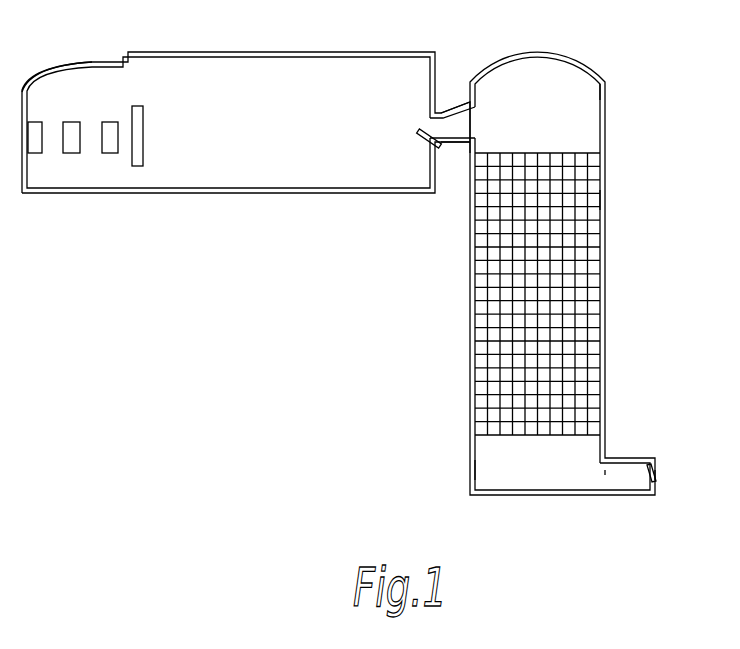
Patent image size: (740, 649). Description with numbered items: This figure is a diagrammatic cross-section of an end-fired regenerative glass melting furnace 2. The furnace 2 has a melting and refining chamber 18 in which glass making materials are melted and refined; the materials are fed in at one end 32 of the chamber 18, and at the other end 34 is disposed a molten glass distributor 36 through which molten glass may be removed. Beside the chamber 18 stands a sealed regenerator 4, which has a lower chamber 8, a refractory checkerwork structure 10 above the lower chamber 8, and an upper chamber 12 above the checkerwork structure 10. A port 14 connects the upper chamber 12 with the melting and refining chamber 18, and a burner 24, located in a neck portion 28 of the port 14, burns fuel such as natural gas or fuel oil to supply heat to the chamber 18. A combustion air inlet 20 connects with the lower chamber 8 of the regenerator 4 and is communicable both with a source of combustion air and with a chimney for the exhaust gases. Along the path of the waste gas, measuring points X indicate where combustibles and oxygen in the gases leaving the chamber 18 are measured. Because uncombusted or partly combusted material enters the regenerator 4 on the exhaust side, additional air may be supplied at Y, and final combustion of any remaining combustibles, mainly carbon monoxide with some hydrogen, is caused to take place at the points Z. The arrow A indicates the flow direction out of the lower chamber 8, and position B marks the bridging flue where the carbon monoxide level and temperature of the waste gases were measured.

The regenerative glass melting furnace 2 is at (635, 155).
The regenerator 4 is at (605, 248).
The lower chamber 8 is at (528, 480).
The refractory checkerwork structure 10 is at (580, 297).
The upper chamber 12 is at (588, 110).
The port 14 is at (453, 110).
The melting and refining chamber 18 is at (290, 195).
The combustion air inlet 20 is at (632, 454).
The burner 24 is at (417, 133).
The neck portion 28 is at (446, 148).
The one end 32 is at (418, 148).
The other end 34 is at (143, 135).
The molten glass distributor 36 is at (68, 64).
The measuring points X is at (423, 125).
The additional air supply points Y is at (598, 203).
The final combustion points Z is at (653, 458).
The flow direction A is at (613, 473).
The bridging flue position B is at (657, 473).